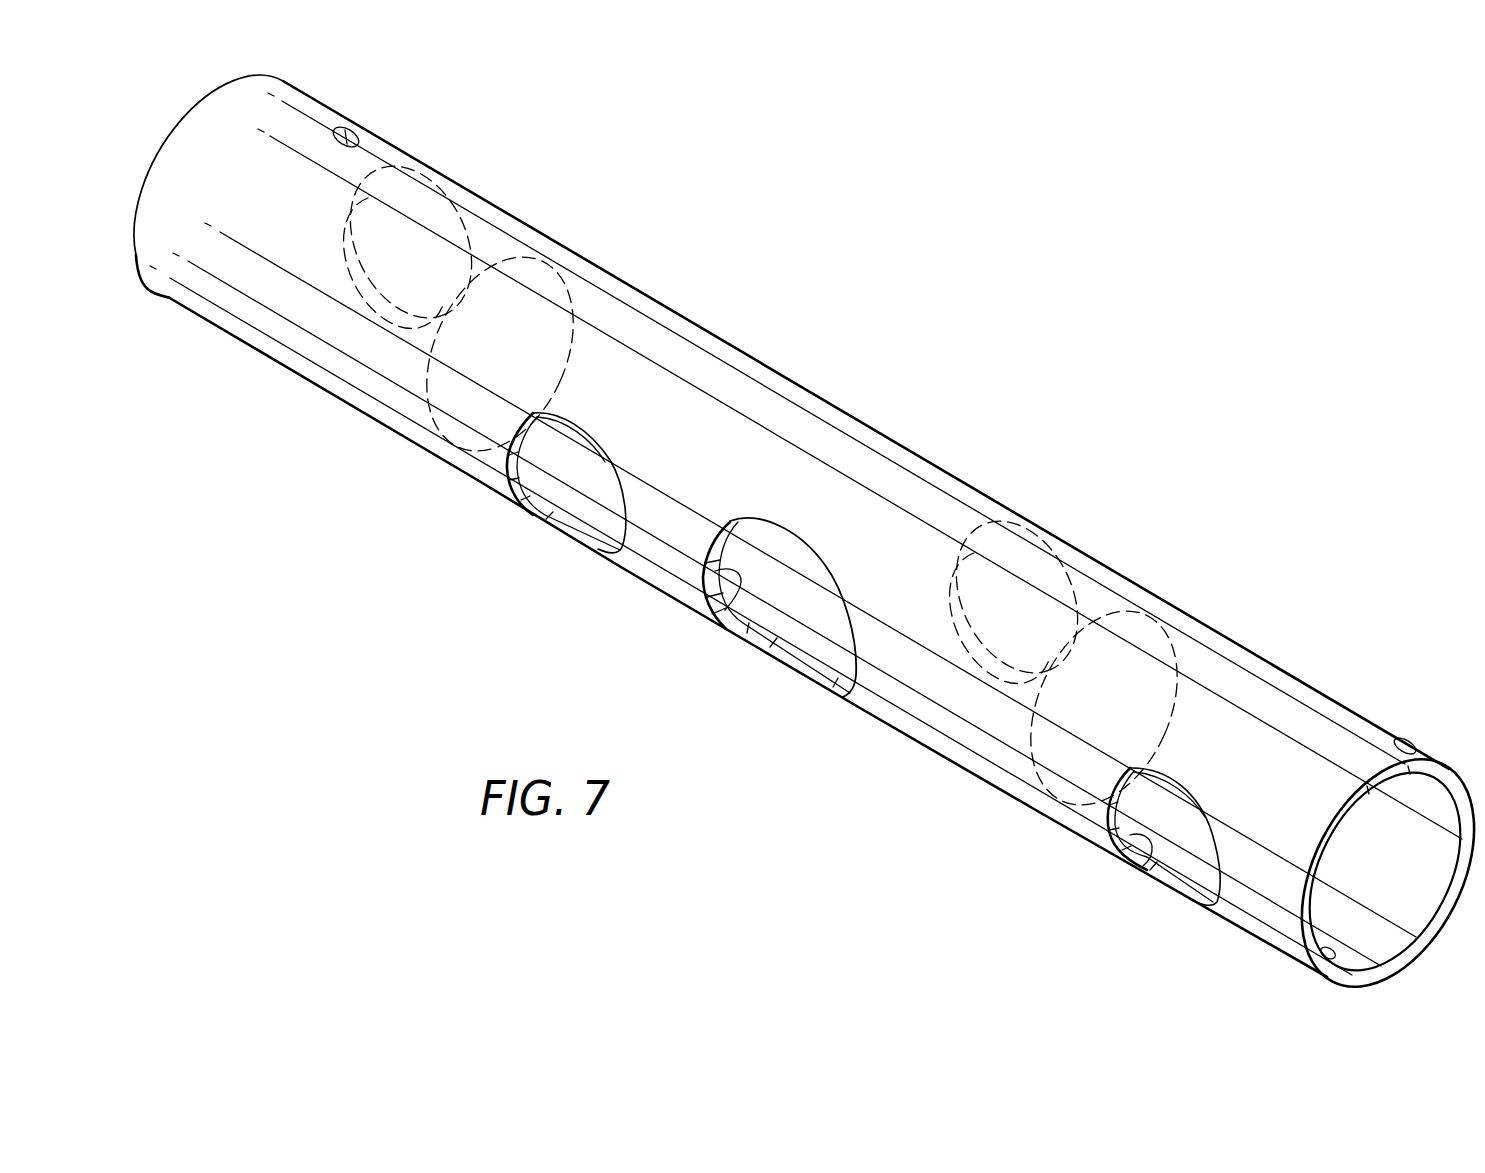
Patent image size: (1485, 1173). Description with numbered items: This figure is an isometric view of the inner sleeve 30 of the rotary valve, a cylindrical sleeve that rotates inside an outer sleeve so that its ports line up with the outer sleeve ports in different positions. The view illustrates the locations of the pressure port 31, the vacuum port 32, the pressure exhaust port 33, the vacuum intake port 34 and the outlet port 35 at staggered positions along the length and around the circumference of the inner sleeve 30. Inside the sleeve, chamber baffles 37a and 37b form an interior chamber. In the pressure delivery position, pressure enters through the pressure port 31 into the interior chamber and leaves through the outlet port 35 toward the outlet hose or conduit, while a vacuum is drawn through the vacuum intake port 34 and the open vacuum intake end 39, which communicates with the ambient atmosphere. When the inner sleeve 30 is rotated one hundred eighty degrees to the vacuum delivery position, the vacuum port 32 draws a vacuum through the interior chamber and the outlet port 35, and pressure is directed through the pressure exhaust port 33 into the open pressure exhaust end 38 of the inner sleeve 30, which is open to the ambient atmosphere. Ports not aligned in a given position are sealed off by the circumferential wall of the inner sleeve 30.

The inner sleeve 30 is at (612, 188).
The pressure port 31 is at (533, 488).
The vacuum port 32 is at (1093, 558).
The pressure exhaust port 33 is at (488, 212).
The vacuum intake port 34 is at (1143, 862).
The outlet port 35 is at (717, 613).
The chamber baffle 37a is at (603, 290).
The chamber baffle 37b is at (1233, 642).
The open pressure exhaust end 38 is at (182, 118).
The open vacuum intake end 39 is at (1405, 875).